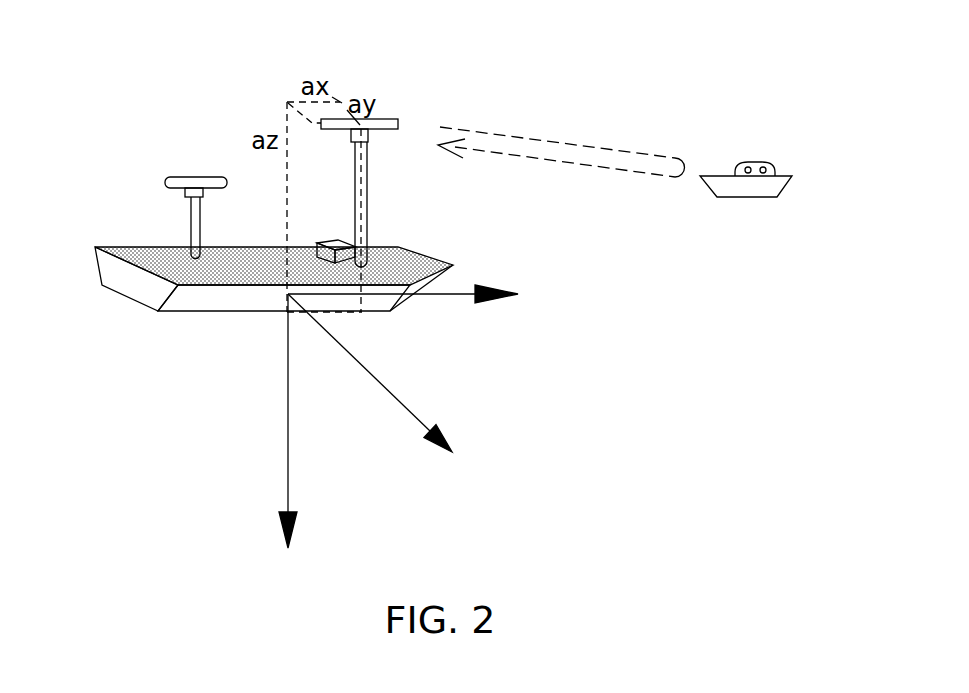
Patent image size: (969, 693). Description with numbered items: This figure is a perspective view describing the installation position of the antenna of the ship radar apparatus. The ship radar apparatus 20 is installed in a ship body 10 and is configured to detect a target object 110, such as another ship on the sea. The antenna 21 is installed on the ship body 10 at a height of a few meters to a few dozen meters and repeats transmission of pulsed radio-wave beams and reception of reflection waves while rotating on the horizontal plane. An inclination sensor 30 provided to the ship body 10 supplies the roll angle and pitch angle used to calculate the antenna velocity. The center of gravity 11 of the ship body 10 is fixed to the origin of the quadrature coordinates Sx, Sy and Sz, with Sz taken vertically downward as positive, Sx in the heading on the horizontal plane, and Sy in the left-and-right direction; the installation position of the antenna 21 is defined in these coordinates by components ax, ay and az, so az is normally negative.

The ship body 10 is at (153, 247).
The center of gravity 11 is at (288, 295).
The ship radar apparatus 20 is at (333, 242).
The antenna 21 is at (385, 119).
The inclination sensor 30 is at (185, 177).
The target object 110 is at (758, 160).